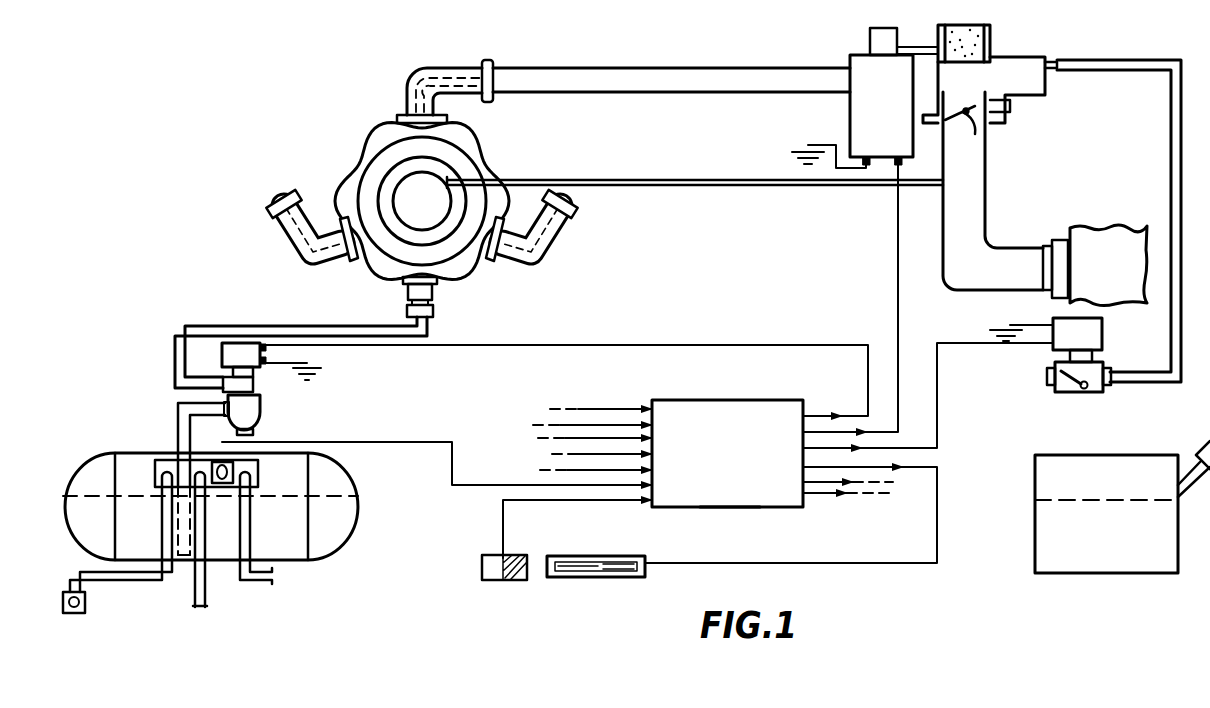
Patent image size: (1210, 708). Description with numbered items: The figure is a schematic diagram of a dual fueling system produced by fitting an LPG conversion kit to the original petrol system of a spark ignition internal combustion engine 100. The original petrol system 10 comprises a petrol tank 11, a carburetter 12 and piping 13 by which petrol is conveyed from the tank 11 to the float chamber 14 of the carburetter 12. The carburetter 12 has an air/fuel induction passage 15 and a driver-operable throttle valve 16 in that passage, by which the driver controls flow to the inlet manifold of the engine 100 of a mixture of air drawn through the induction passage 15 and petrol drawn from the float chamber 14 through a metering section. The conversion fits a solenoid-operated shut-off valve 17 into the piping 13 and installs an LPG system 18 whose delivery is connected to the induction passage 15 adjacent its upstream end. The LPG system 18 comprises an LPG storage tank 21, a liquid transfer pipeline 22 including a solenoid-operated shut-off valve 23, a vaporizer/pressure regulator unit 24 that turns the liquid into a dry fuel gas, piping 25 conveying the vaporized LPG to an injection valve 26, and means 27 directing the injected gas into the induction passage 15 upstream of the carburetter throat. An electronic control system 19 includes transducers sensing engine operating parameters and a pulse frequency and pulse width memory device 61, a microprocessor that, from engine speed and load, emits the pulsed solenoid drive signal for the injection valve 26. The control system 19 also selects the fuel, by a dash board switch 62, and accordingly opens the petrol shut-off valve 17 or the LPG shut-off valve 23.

The petrol system 10 is at (1180, 530).
The petrol tank 11 is at (1163, 560).
The carburetter 12 is at (1014, 120).
The piping 13 is at (1176, 324).
The float chamber 14 is at (1045, 94).
The air/fuel induction passage 15 is at (1010, 106).
The throttle valve 16 is at (983, 122).
The solenoid-operated shut-off valve 17 is at (1086, 392).
The LPG system 18 is at (350, 147).
The electronic control system 19 is at (719, 412).
The LPG storage tank 21 is at (335, 483).
The liquid transfer pipeline 22 is at (327, 330).
The solenoid-operated shut-off valve 23 is at (253, 383).
The vaporizer/pressure regulator unit 24 is at (445, 250).
The piping 25 is at (642, 98).
The injection valve 26 is at (850, 113).
The means for directing vaporized LPG 27 is at (990, 42).
The pulse frequency and pulse width memory device 61 is at (730, 492).
The switch 62 is at (610, 578).
The spark ignition internal combustion engine 100 is at (1104, 245).